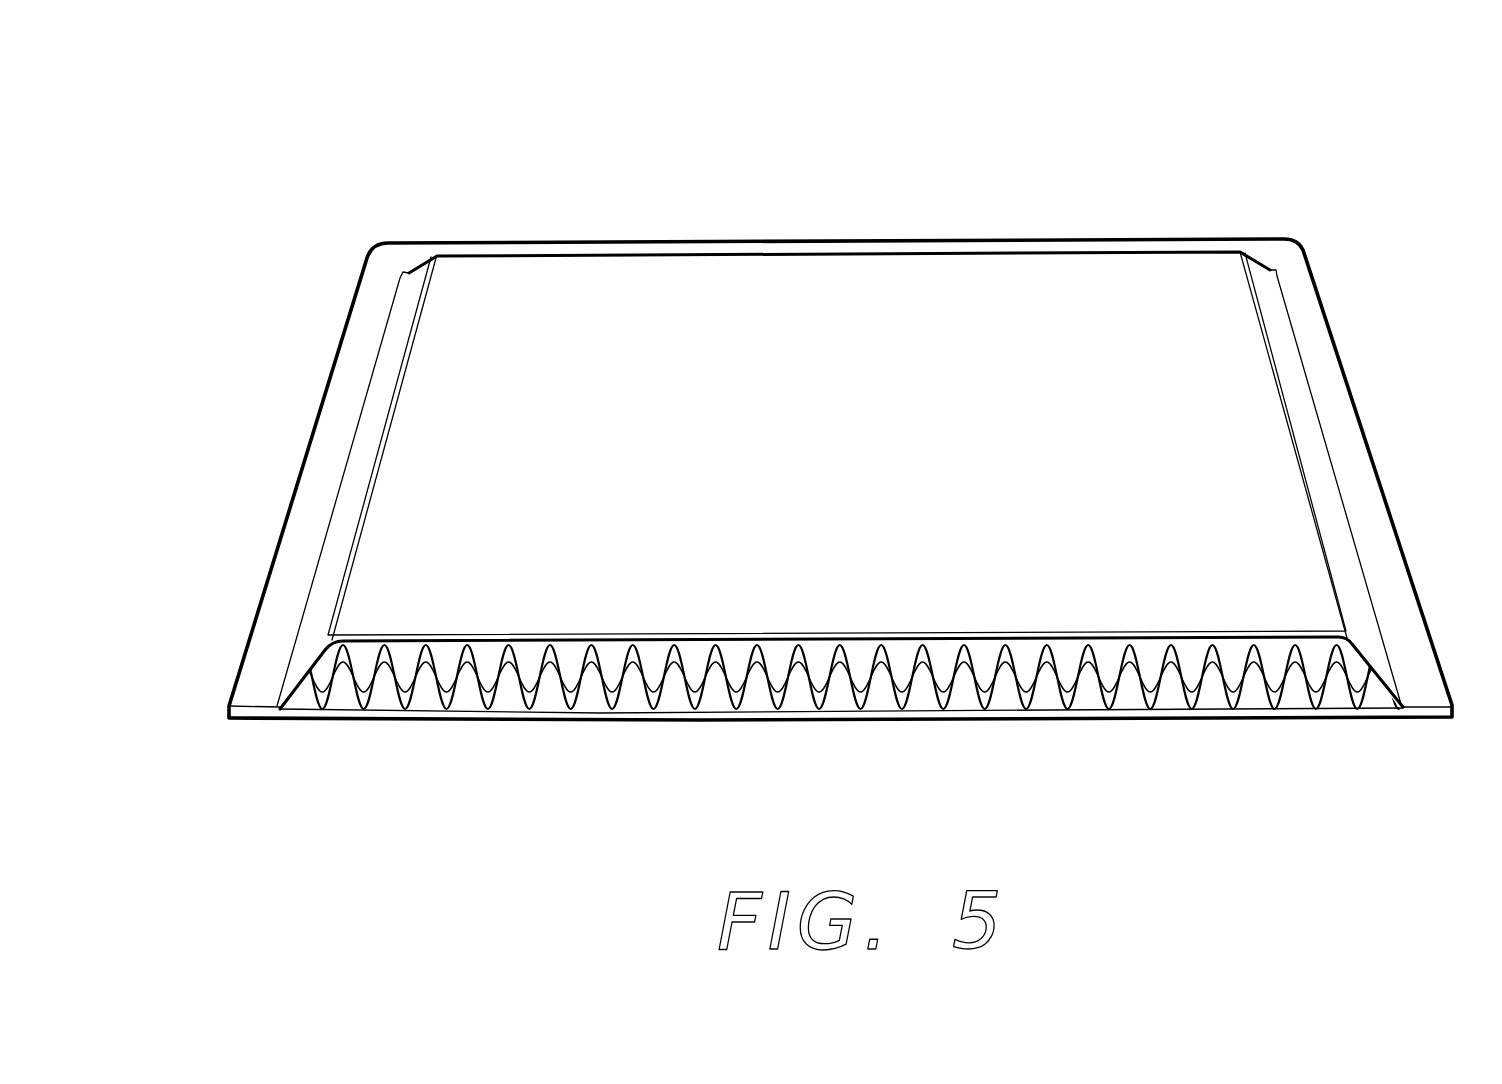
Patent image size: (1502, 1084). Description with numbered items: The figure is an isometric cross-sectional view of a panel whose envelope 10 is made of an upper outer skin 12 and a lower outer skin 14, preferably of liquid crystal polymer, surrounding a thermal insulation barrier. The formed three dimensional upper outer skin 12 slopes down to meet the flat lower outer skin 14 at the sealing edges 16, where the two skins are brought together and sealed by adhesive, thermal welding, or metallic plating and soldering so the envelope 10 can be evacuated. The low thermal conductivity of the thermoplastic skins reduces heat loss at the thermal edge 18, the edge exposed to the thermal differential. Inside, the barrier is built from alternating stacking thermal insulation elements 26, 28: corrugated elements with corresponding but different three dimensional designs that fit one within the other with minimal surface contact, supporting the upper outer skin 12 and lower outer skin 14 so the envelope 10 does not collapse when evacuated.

The envelope 10 is at (836, 327).
The upper outer skin 12 is at (1238, 508).
The lower outer skin 14 is at (1027, 718).
The sealing edge 16 is at (323, 470).
The thermal edge 18 is at (338, 526).
The thermal insulation element 26 is at (562, 655).
The thermal insulation element 28 is at (598, 662).